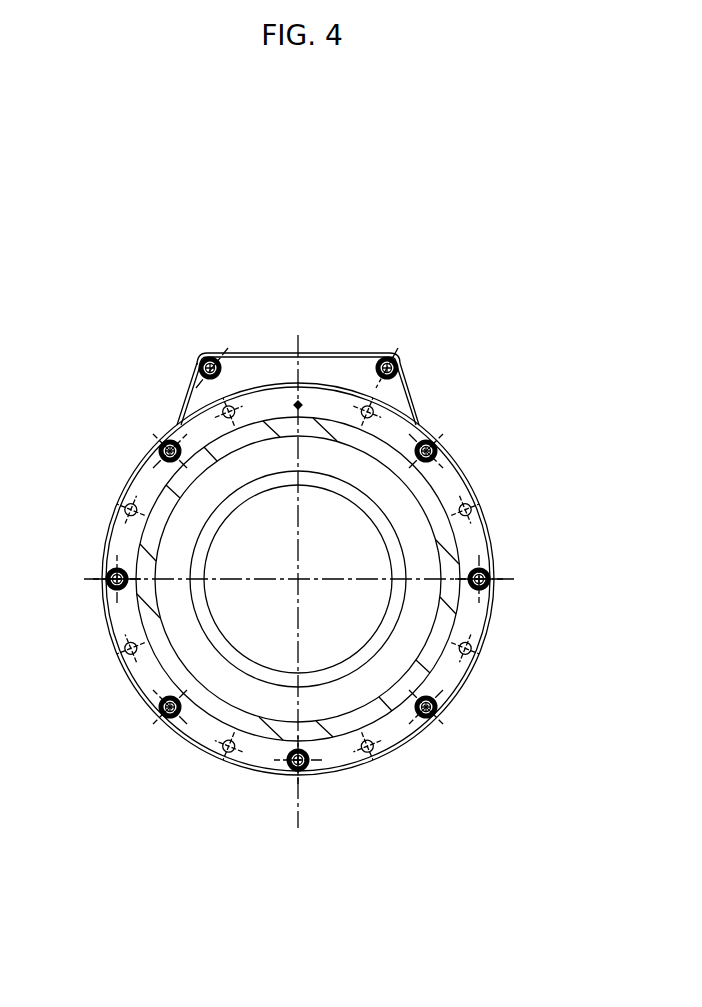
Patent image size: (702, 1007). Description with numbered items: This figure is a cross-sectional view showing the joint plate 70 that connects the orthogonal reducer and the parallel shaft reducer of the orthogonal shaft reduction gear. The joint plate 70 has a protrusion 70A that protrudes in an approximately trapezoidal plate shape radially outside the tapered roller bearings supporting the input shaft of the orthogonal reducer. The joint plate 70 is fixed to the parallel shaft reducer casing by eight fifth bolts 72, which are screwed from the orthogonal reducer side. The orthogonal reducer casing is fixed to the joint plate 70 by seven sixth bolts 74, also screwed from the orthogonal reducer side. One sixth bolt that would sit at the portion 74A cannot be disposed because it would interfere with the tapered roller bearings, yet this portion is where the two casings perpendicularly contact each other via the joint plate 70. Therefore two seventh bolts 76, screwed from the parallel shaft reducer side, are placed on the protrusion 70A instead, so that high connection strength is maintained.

The joint plate 70 is at (427, 427).
The protrusion 70A is at (325, 368).
The fifth bolts 72 is at (181, 405).
The sixth bolts 74 is at (432, 452).
The portion where a sixth bolt cannot be disposed 74A is at (298, 405).
The seventh bolts 76 is at (212, 356).